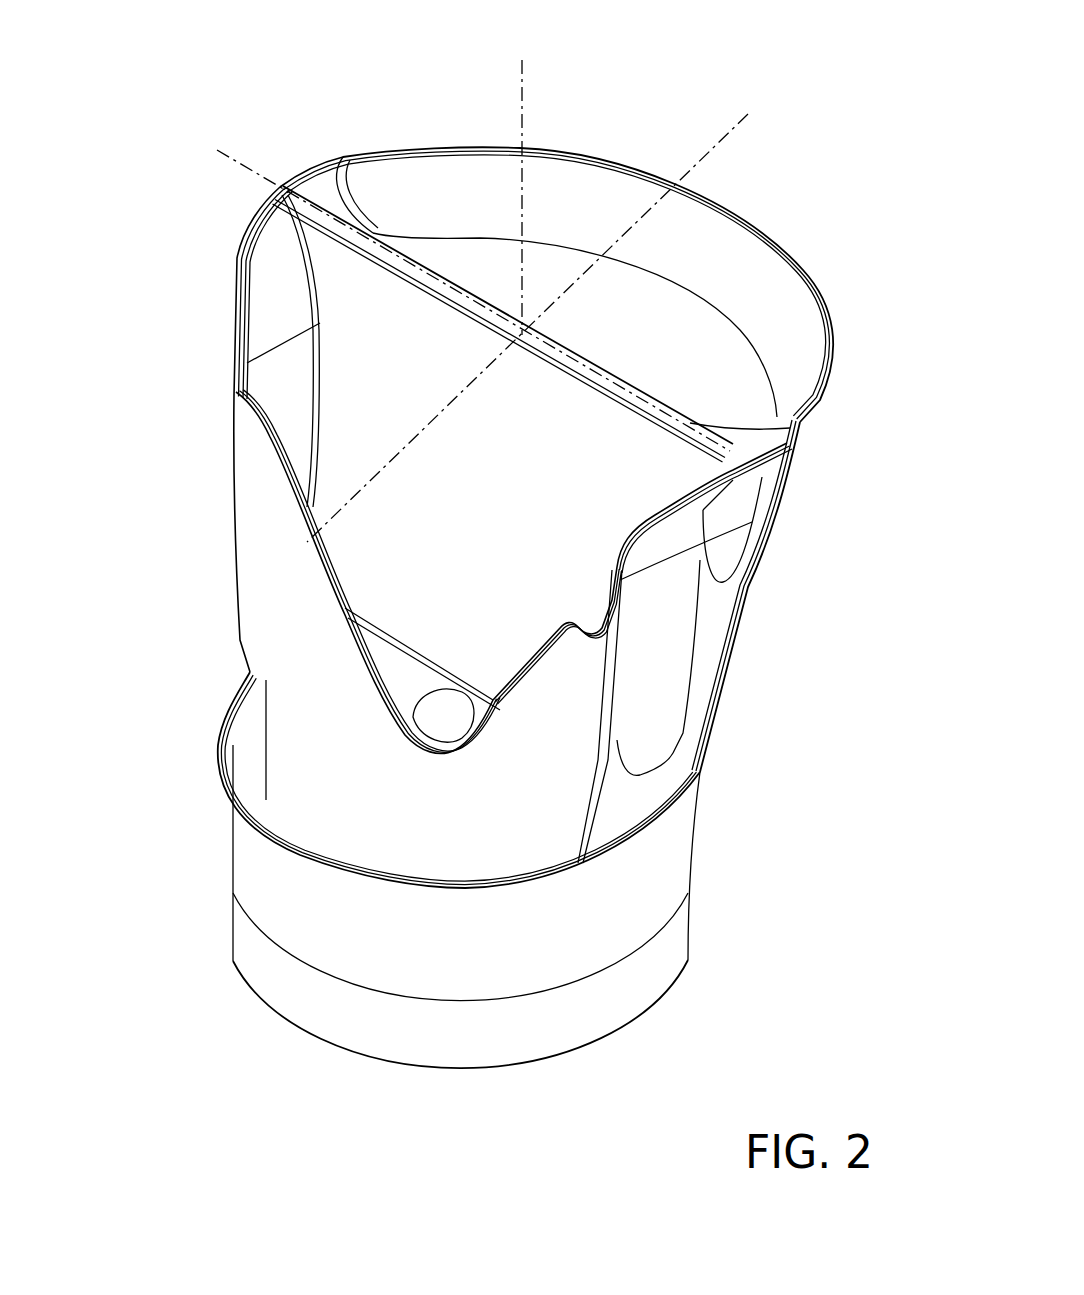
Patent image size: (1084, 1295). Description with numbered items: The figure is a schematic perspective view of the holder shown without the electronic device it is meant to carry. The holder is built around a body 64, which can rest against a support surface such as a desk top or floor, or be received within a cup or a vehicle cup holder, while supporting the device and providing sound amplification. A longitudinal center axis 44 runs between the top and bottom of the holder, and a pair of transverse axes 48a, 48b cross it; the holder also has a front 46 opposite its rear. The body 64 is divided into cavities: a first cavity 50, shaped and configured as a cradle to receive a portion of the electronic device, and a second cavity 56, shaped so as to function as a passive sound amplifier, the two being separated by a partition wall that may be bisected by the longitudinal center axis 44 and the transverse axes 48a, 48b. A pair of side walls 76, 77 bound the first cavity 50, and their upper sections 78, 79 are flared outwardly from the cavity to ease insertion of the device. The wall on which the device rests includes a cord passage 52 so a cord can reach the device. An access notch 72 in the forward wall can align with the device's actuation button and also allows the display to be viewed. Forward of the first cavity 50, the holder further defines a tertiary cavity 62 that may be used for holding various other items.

The longitudinal center axis 44 is at (522, 102).
The front 46 is at (207, 602).
The transverse axis 48a is at (752, 113).
The transverse axis 48b is at (253, 167).
The first cavity 50 is at (372, 418).
The cord passage 52 is at (417, 690).
The second cavity 56 is at (635, 318).
The tertiary cavity 62 is at (433, 863).
The body 64 is at (317, 173).
The access notch 72 is at (423, 731).
The side wall 76 is at (280, 382).
The side wall 77 is at (655, 673).
The upper section of side wall 78 is at (278, 290).
The upper section of side wall 79 is at (752, 522).